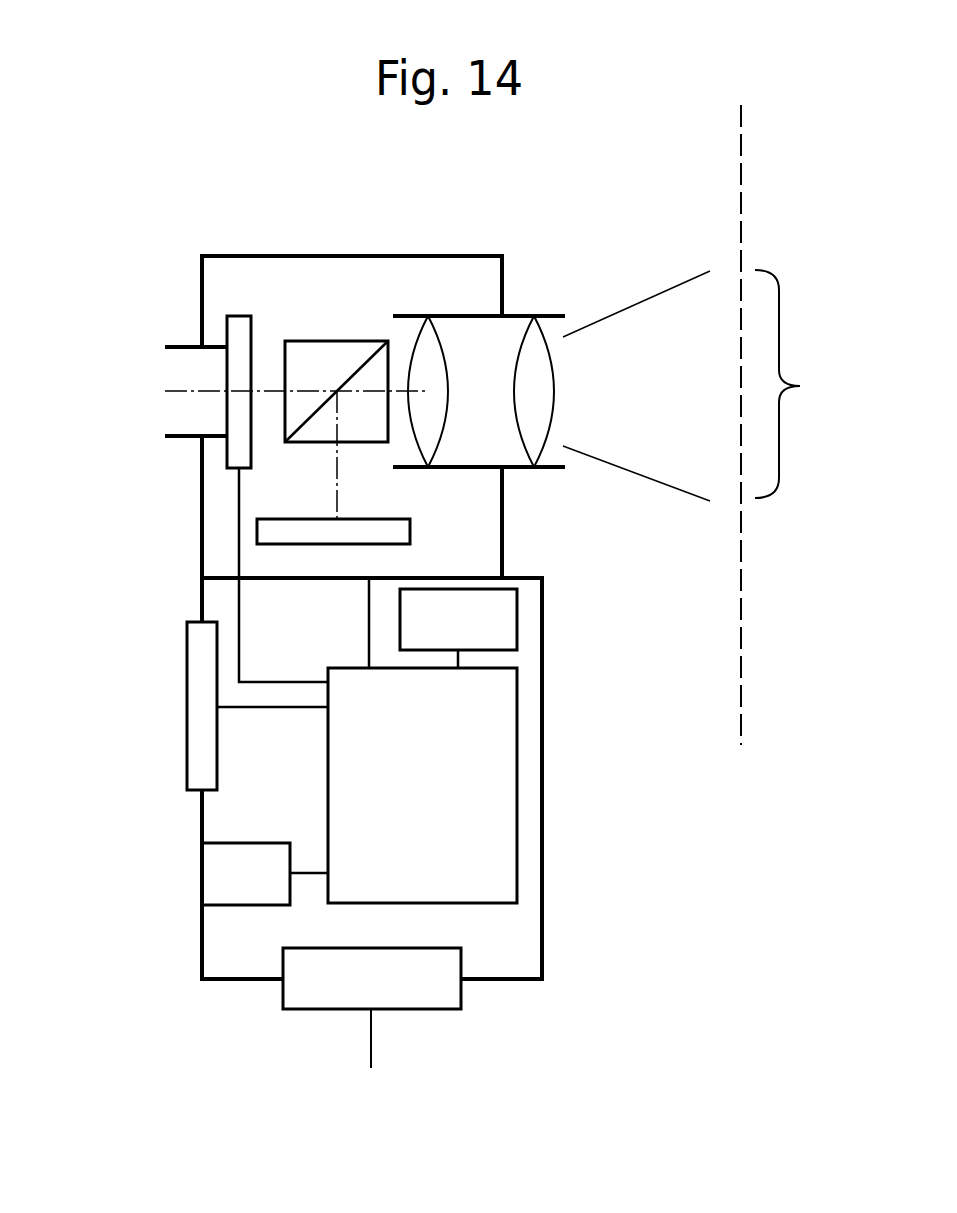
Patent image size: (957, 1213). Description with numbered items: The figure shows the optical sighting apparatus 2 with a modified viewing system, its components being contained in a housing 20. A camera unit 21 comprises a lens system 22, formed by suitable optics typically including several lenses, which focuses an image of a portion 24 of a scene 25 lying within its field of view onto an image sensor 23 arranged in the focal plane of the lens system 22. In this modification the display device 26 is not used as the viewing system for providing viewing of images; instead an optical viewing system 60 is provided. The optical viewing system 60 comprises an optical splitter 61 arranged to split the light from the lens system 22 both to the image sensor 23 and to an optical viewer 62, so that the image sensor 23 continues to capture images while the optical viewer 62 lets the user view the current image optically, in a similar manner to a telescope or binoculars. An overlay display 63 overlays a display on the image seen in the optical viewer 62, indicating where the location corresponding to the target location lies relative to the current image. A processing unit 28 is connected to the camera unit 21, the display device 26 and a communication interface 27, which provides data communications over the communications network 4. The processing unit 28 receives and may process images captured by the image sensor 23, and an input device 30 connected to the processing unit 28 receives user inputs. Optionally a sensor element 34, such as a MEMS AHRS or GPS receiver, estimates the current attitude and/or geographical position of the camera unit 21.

The optical sighting apparatus 2 is at (157, 833).
The communications network 4 is at (371, 1046).
The housing 20 is at (202, 601).
The camera unit 21 is at (435, 268).
The lens system 22 is at (500, 343).
The image sensor 23 is at (257, 533).
The portion of a scene 24 is at (799, 384).
The scene 25 is at (741, 165).
The display device 26 is at (187, 708).
The communication interface 27 is at (452, 1009).
The processing unit 28 is at (517, 790).
The input device 30 is at (202, 890).
The sensor element 34 is at (517, 612).
The optical viewing system 60 is at (170, 413).
The optical splitter 61 is at (335, 341).
The optical viewer 62 is at (183, 347).
The overlay display 63 is at (239, 316).